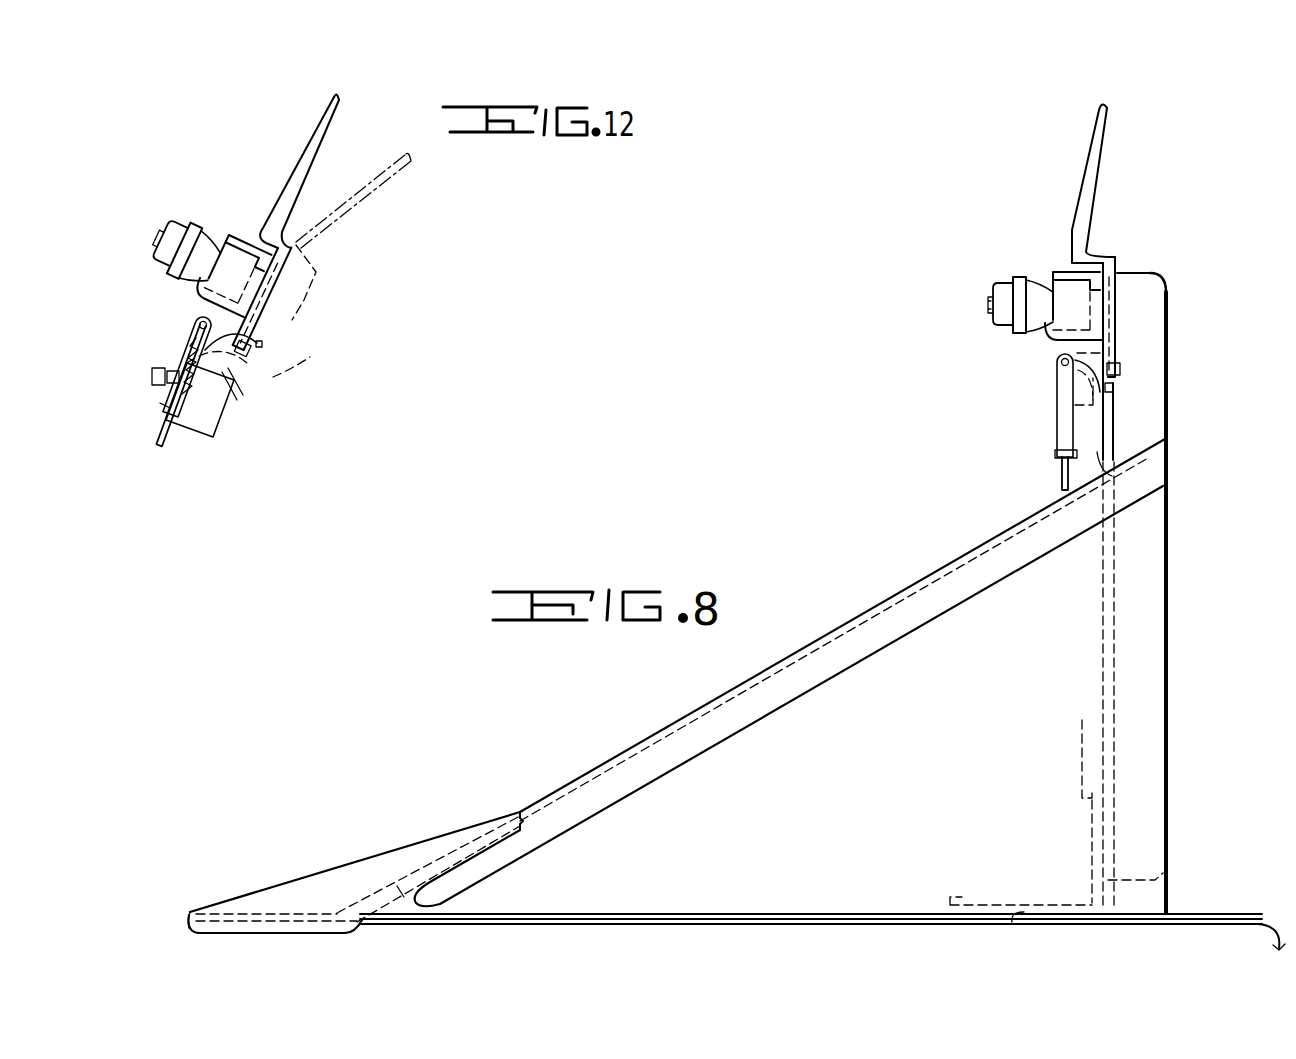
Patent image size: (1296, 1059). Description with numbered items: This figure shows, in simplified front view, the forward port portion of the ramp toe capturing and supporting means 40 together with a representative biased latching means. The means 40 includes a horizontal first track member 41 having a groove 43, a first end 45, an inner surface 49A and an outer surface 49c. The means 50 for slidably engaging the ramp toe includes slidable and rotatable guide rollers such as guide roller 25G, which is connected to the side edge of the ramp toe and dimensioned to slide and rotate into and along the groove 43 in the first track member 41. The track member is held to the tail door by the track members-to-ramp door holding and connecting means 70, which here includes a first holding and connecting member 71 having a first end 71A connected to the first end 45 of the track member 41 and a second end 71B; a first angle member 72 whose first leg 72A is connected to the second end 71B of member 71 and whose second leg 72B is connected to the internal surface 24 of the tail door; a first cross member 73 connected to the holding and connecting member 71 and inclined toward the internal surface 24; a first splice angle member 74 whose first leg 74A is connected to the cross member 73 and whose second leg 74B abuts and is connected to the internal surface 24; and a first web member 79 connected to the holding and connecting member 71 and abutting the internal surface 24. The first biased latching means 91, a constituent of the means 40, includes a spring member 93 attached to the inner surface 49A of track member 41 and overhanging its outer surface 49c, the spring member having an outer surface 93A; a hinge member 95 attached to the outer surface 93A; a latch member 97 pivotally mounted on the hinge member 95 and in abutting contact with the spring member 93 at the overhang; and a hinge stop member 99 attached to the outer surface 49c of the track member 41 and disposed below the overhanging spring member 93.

In FIG. 8, the internal surface of the tail door 24 is at (1193, 913).
In FIG. 8, the guide roller 25G is at (1064, 323).
In FIG. 12, the guide roller 25G is at (229, 248).
In FIG. 8, the capturing and supporting means 40 is at (1174, 552).
In FIG. 12, the capturing and supporting means 40 is at (189, 196).
In FIG. 8, the first track member 41 is at (1043, 333).
In FIG. 12, the first track member 41 is at (193, 283).
In FIG. 8, the groove 43 is at (1097, 318).
In FIG. 12, the groove 43 is at (233, 262).
In FIG. 8, the first end of the first track member 45 is at (1106, 460).
In FIG. 8, the inner surface of the first track member 49A is at (1056, 453).
In FIG. 8, the outer surface of the first track member 49c is at (1122, 367).
In FIG. 8, the means for slidably engaging the ramp toe 50 is at (1032, 255).
In FIG. 12, the means for slidably engaging the ramp toe 50 is at (165, 279).
In FIG. 8, the track members-to-ramp door holding and connecting means 70 is at (1198, 770).
In FIG. 8, the first holding and connecting member 71 is at (1147, 410).
In FIG. 8, the first end of the first holding and connecting member 71A is at (1153, 282).
In FIG. 8, the second end of the first holding and connecting member 71B is at (1150, 840).
In FIG. 8, the first angle member 72 is at (1090, 897).
In FIG. 8, the first leg of the first angle member 72A is at (1068, 746).
In FIG. 8, the second leg of the first angle member 72B is at (1018, 920).
In FIG. 8, the first cross member 73 is at (756, 676).
In FIG. 8, the first splice angle member 74 is at (322, 870).
In FIG. 8, the first leg of the first splice angle member 74A is at (495, 812).
In FIG. 8, the second leg of the first splice angle member 74B is at (183, 913).
In FIG. 8, the first web member 79 is at (1102, 644).
In FIG. 8, the first biased latching means 91 is at (1120, 183).
In FIG. 12, the first biased latching means 91 is at (278, 125).
In FIG. 8, the spring member 93 is at (1127, 363).
In FIG. 12, the spring member 93 is at (260, 347).
In FIG. 8, the outer surface of the spring member 93A is at (1060, 431).
In FIG. 12, the outer surface of the spring member 93A is at (162, 403).
In FIG. 8, the hinge member 95 is at (1057, 414).
In FIG. 12, the hinge member 95 is at (192, 353).
In FIG. 8, the latch member 97 is at (1107, 122).
In FIG. 12, the latch member 97 is at (403, 203).
In FIG. 8, the hinge stop member 99 is at (1115, 388).
In FIG. 12, the hinge stop member 99 is at (242, 392).